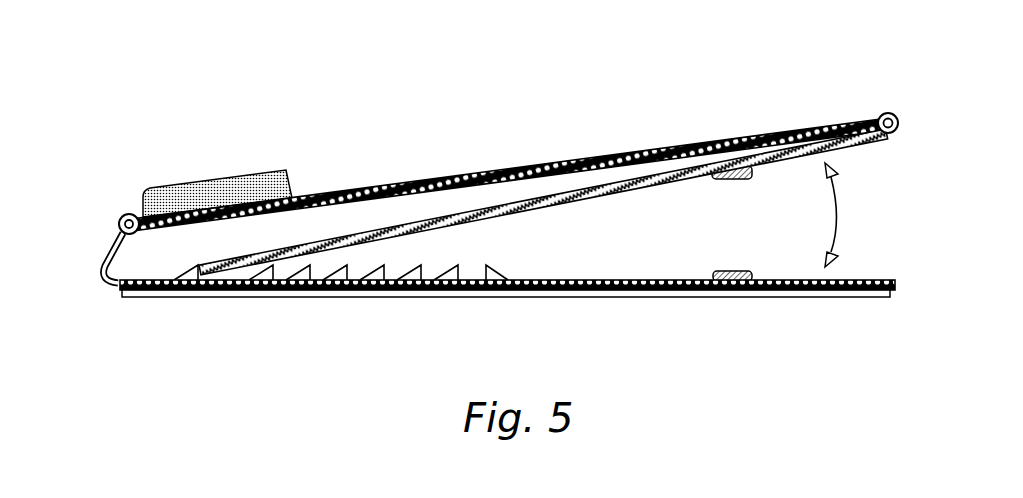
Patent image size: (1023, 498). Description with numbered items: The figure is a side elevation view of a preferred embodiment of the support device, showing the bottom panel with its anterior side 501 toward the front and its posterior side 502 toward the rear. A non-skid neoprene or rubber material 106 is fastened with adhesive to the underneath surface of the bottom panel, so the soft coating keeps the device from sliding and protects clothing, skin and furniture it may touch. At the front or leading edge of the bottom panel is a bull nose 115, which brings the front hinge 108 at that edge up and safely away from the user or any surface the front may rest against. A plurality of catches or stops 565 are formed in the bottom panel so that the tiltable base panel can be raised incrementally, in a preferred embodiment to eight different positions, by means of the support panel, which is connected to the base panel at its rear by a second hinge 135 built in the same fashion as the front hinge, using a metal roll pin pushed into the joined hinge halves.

The non-skid neoprene or rubber material 106 is at (200, 295).
The hinge pin 108 is at (121, 217).
The bull nose 115 is at (102, 265).
The second hinge 135 is at (896, 115).
The anterior side 501 is at (120, 292).
The posterior side 502 is at (893, 293).
The catches or stops 565 is at (380, 273).